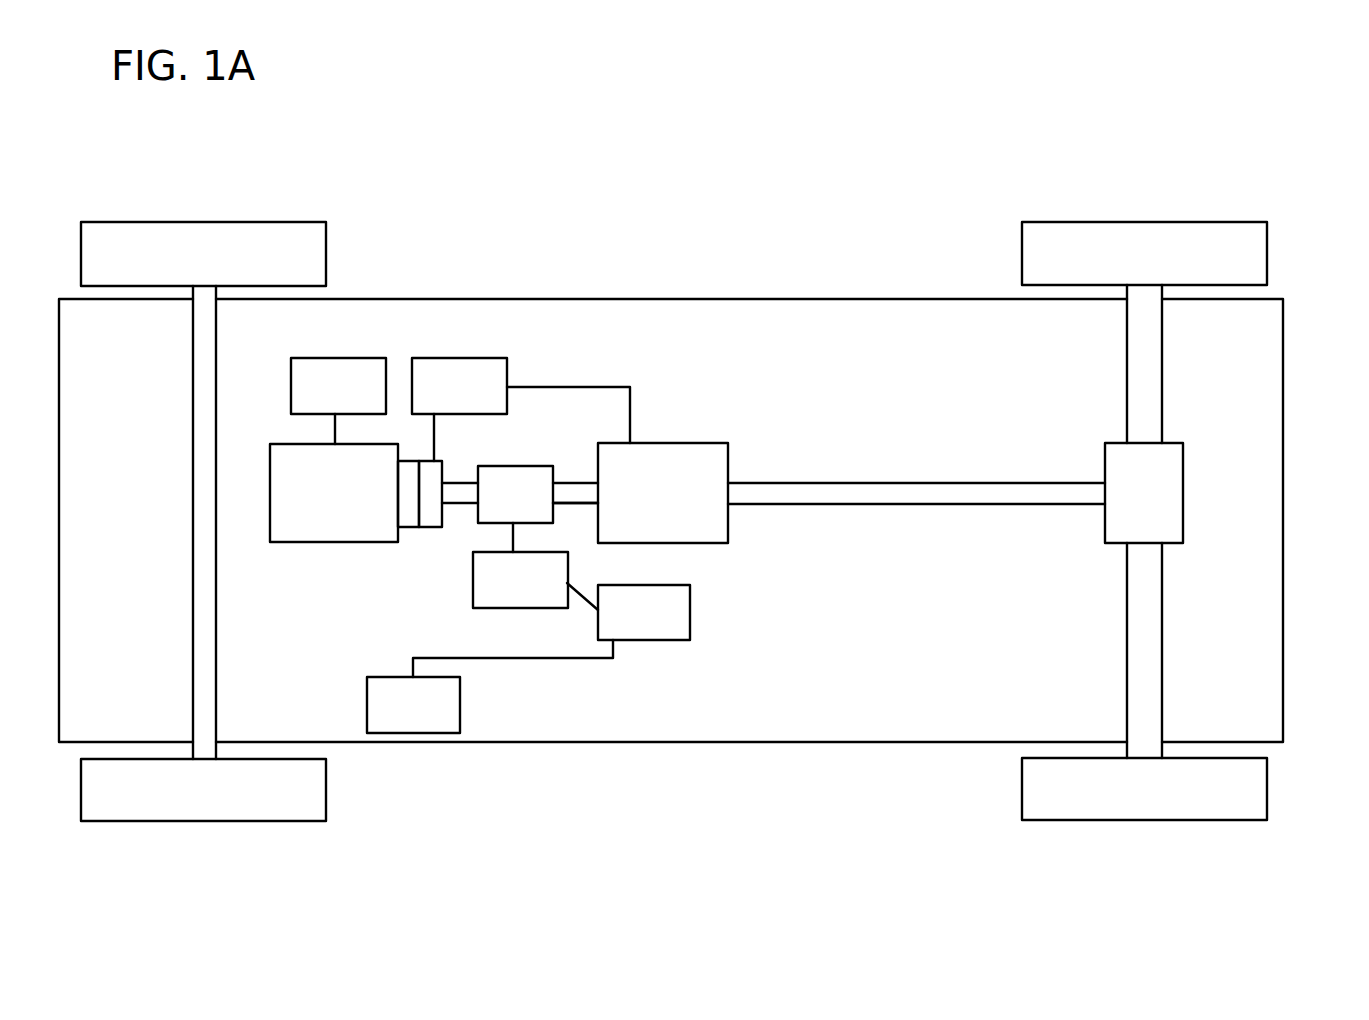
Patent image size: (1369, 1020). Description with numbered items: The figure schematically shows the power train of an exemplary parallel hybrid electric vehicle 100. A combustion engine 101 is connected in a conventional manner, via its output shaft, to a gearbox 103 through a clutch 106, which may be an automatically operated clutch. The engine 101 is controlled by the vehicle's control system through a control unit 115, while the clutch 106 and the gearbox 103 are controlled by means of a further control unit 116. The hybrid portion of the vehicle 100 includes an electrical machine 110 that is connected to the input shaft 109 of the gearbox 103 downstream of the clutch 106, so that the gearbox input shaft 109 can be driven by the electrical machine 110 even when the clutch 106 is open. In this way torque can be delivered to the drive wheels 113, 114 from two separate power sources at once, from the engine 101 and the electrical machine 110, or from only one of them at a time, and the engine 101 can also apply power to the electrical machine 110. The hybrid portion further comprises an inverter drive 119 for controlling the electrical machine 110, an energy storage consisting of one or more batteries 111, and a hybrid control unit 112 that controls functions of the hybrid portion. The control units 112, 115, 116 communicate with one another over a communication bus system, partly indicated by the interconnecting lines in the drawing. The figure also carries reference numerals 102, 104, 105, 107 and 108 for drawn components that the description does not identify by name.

The hybrid electric vehicle 100 is at (582, 113).
The combustion engine 101 is at (302, 528).
The clutch 102 is at (403, 523).
The gearbox 103 is at (666, 455).
The rear axle 104 is at (1150, 360).
The rear axle 105 is at (1160, 659).
The clutch 106 is at (425, 518).
The propeller shaft 107 is at (1018, 504).
The differential gear 108 is at (1180, 489).
The input shaft 109 is at (558, 505).
The electrical machine 110 is at (525, 477).
The batteries 111 is at (382, 691).
The hybrid control unit 112 is at (643, 620).
The drive wheel 113 is at (1262, 244).
The drive wheel 114 is at (1262, 791).
The control unit 115 is at (340, 397).
The control unit 116 is at (493, 375).
The inverter drive 119 is at (541, 589).